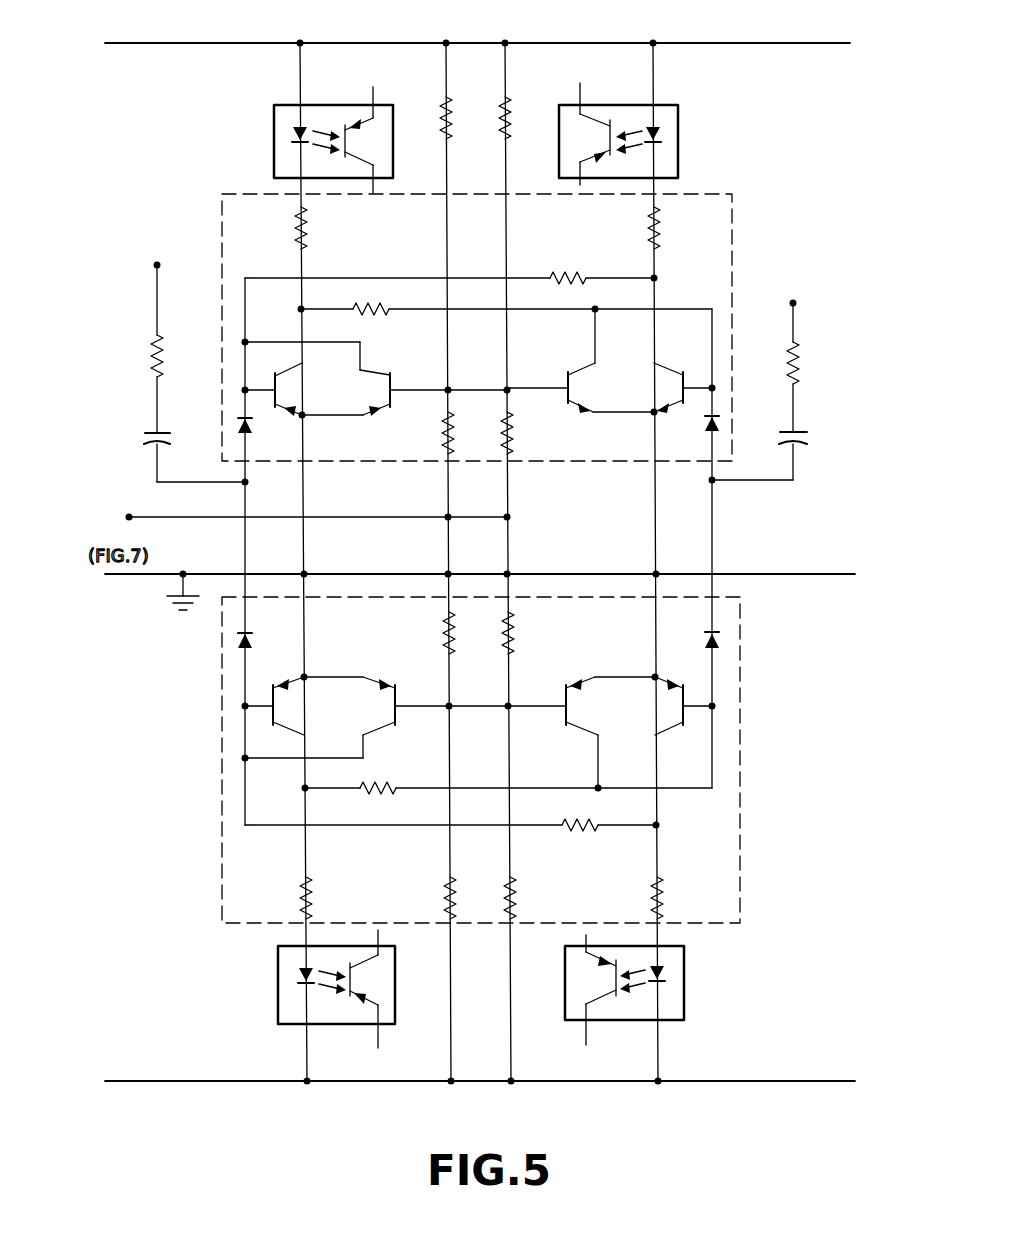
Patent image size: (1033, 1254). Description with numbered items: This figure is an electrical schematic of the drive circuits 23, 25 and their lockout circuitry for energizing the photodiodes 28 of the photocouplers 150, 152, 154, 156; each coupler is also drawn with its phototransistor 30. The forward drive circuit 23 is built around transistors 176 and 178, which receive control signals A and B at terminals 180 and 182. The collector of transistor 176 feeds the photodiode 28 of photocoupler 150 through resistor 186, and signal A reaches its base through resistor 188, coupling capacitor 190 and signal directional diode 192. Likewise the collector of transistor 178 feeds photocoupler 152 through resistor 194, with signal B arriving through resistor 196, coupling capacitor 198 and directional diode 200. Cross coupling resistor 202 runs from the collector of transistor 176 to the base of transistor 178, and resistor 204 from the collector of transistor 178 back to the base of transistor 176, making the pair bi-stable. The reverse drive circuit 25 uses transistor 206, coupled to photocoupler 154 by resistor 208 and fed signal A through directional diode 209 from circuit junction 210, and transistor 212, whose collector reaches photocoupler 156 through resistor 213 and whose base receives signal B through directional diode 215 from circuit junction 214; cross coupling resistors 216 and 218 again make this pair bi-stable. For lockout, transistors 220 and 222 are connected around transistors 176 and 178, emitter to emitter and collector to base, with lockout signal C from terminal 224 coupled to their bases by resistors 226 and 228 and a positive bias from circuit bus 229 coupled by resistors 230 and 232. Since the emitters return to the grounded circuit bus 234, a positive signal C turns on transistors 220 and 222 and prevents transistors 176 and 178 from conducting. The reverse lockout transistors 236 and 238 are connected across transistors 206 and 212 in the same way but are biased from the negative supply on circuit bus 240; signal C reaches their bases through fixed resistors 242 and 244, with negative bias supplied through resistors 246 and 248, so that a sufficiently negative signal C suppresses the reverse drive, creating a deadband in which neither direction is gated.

The circuit bus 229 is at (385, 43).
The circuit bus 234 is at (381, 574).
The circuit bus 240 is at (390, 1084).
The drive circuit 23 is at (732, 194).
The drive circuit 25 is at (740, 677).
The photocoupler 150 is at (330, 105).
The photocoupler 152 is at (678, 105).
The photocoupler 154 is at (278, 1020).
The photocoupler 156 is at (684, 1020).
The photodiode 28 is at (290, 132).
The phototransistor 30 is at (373, 137).
The resistor 230 is at (436, 104).
The resistor 232 is at (515, 104).
The resistor 186 is at (308, 230).
The resistor 194 is at (664, 226).
The resistor 204 is at (578, 268).
The resistor 202 is at (374, 318).
The transistor 176 is at (288, 392).
The transistor 220 is at (380, 396).
The transistor 222 is at (570, 370).
The transistor 178 is at (660, 384).
The signal directional diode 192 is at (256, 424).
The directional diode 200 is at (704, 427).
The resistor 226 is at (440, 434).
The resistor 228 is at (515, 437).
The terminal 180 is at (152, 265).
The resistor 188 is at (150, 359).
The coupling capacitor 190 is at (146, 434).
The circuit junction 210 is at (252, 482).
The terminal 224 is at (120, 502).
The terminal 182 is at (796, 304).
The resistor 196 is at (800, 358).
The coupling capacitor 198 is at (800, 438).
The circuit junction 214 is at (712, 480).
The directional diode 209 is at (262, 646).
The directional diode 215 is at (714, 640).
The transistor 206 is at (286, 703).
The transistor 236 is at (388, 682).
The transistor 238 is at (566, 728).
The transistor 212 is at (666, 704).
The cross coupling resistor 216 is at (396, 778).
The cross coupling resistor 218 is at (581, 832).
The fixed resistor 242 is at (440, 632).
The fixed resistor 244 is at (514, 632).
The resistor 246 is at (442, 876).
The resistor 248 is at (519, 891).
The resistor 208 is at (312, 892).
The resistor 213 is at (664, 888).